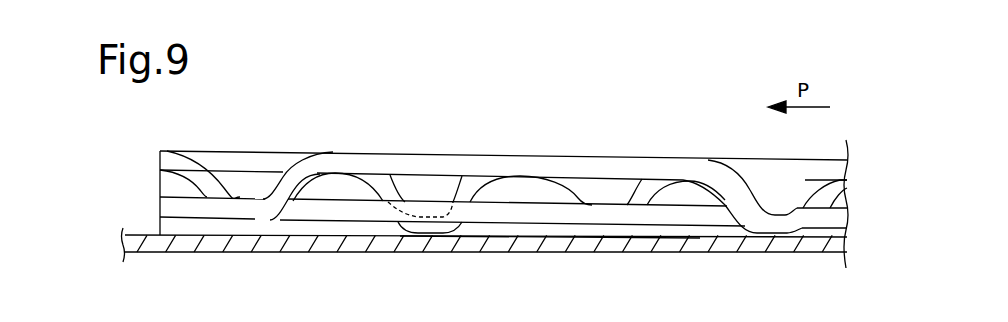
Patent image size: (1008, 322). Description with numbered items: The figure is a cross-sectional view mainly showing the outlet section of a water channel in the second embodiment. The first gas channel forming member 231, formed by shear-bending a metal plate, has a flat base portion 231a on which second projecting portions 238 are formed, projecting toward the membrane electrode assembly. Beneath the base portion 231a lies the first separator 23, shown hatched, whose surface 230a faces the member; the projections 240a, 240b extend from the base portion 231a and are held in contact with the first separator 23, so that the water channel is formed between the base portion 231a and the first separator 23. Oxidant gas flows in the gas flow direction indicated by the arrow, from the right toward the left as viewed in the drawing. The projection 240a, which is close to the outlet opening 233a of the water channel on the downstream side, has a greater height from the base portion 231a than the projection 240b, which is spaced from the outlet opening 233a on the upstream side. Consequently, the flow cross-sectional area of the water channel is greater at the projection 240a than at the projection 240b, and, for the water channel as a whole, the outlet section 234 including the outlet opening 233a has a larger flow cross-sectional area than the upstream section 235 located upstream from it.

The first separator 23 is at (162, 253).
The housing mounting surface 230a is at (529, 220).
The first gas channel forming member 231 is at (633, 145).
The base portion 231a is at (338, 200).
The outlet opening 233a is at (160, 222).
The outlet section 234 is at (179, 222).
The upstream section 235 is at (559, 231).
The second projecting portion 238 is at (462, 154).
The projection 240a is at (403, 236).
The projection 240b is at (753, 238).